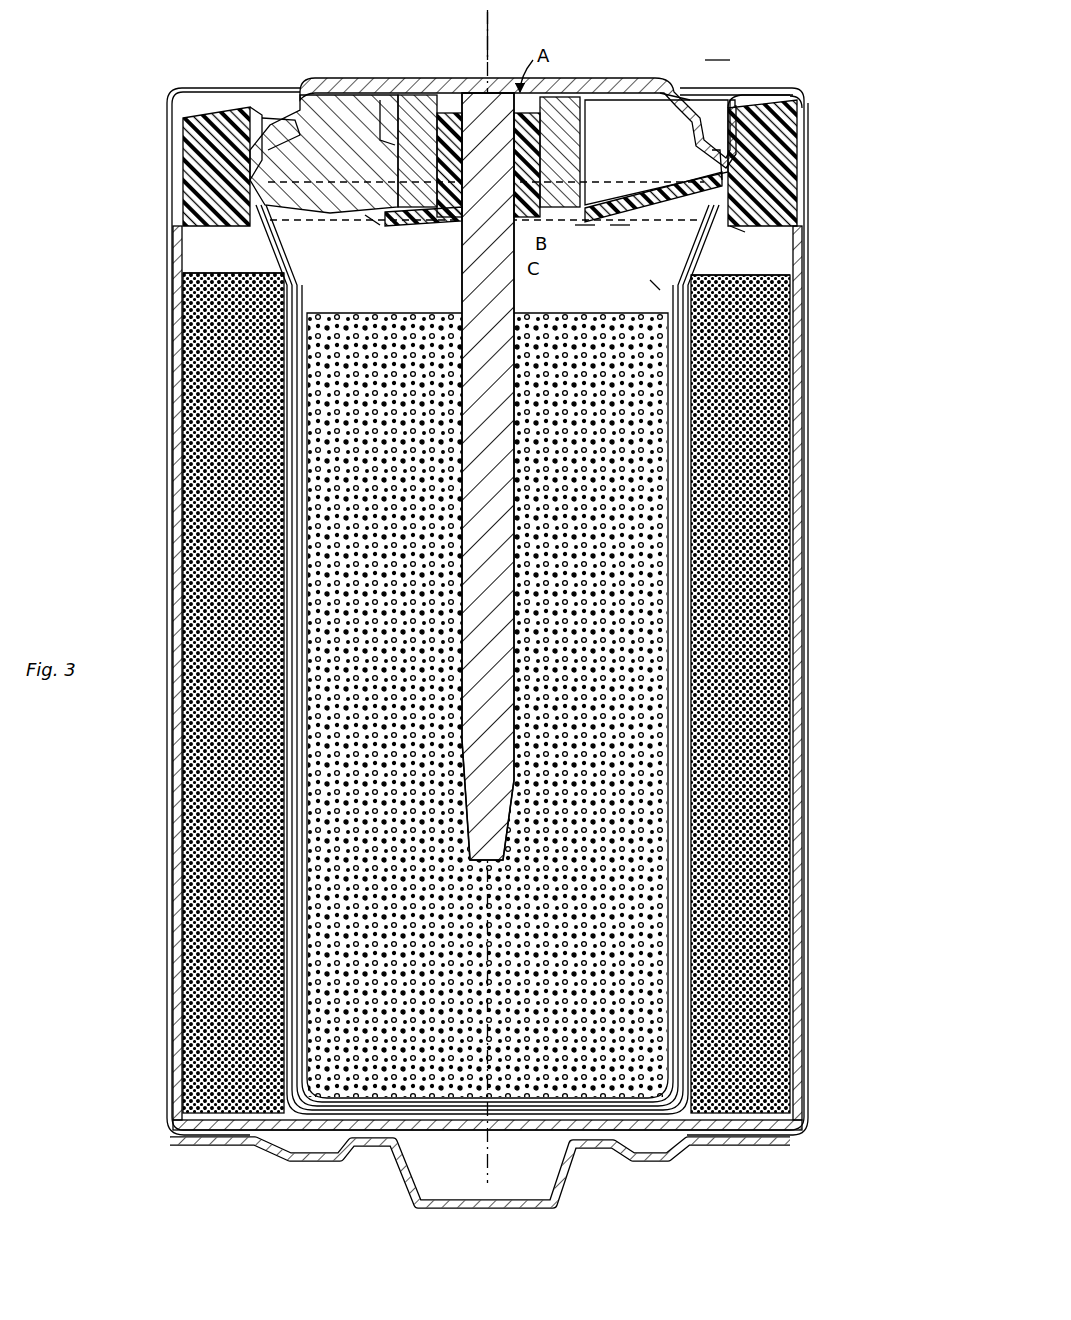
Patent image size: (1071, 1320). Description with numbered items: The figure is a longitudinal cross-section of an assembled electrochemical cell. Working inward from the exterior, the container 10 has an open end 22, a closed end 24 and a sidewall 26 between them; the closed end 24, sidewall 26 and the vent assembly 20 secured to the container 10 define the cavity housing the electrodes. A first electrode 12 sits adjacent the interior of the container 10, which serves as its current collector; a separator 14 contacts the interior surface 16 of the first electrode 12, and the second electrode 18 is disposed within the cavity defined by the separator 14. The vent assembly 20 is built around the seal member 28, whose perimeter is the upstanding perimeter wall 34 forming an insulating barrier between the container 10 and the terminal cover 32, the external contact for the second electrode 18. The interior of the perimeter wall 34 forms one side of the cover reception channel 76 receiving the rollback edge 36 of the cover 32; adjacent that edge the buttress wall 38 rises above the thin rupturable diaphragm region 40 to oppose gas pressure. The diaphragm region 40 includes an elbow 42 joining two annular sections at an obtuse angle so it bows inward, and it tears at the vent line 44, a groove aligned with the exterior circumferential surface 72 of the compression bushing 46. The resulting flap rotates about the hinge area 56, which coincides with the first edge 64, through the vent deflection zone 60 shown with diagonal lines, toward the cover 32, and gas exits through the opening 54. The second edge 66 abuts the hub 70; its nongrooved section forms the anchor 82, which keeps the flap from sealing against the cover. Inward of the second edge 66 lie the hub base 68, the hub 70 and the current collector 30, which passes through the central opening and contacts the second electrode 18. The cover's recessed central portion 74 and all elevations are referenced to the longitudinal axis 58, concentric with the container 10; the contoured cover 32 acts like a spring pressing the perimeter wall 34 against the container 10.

The container 10 is at (170, 318).
The first electrode 12 is at (240, 385).
The separator 14 is at (287, 462).
The interior surface 16 is at (287, 530).
The second electrode 18 is at (410, 580).
The vent assembly 20 is at (722, 57).
The open end 22 is at (725, 115).
The closed end 24 is at (700, 1165).
The sidewall 26 is at (175, 800).
The seal member 28 is at (620, 234).
The current collector 30 is at (495, 290).
The terminal cover 32 is at (390, 140).
The perimeter wall 34 is at (800, 177).
The rollback edge 36 is at (745, 228).
The buttress wall 38 is at (712, 160).
The diaphragm region 40 is at (605, 190).
The elbow 42 is at (655, 285).
The vent line 44 is at (410, 232).
The compression bushing 46 is at (582, 85).
The opening 54 is at (690, 97).
The hinge area 56 is at (250, 182).
The longitudinal axis 58 is at (492, 42).
The vent deflection zone 60 is at (318, 120).
The first edge 64 is at (250, 100).
The second edge 66 is at (372, 228).
The hub base 68 is at (445, 235).
The hub 70 is at (450, 120).
The exterior circumferential surface 72 is at (334, 128).
The central portion 74 is at (613, 106).
The cover reception channel 76 is at (803, 140).
The anchor 82 is at (585, 245).